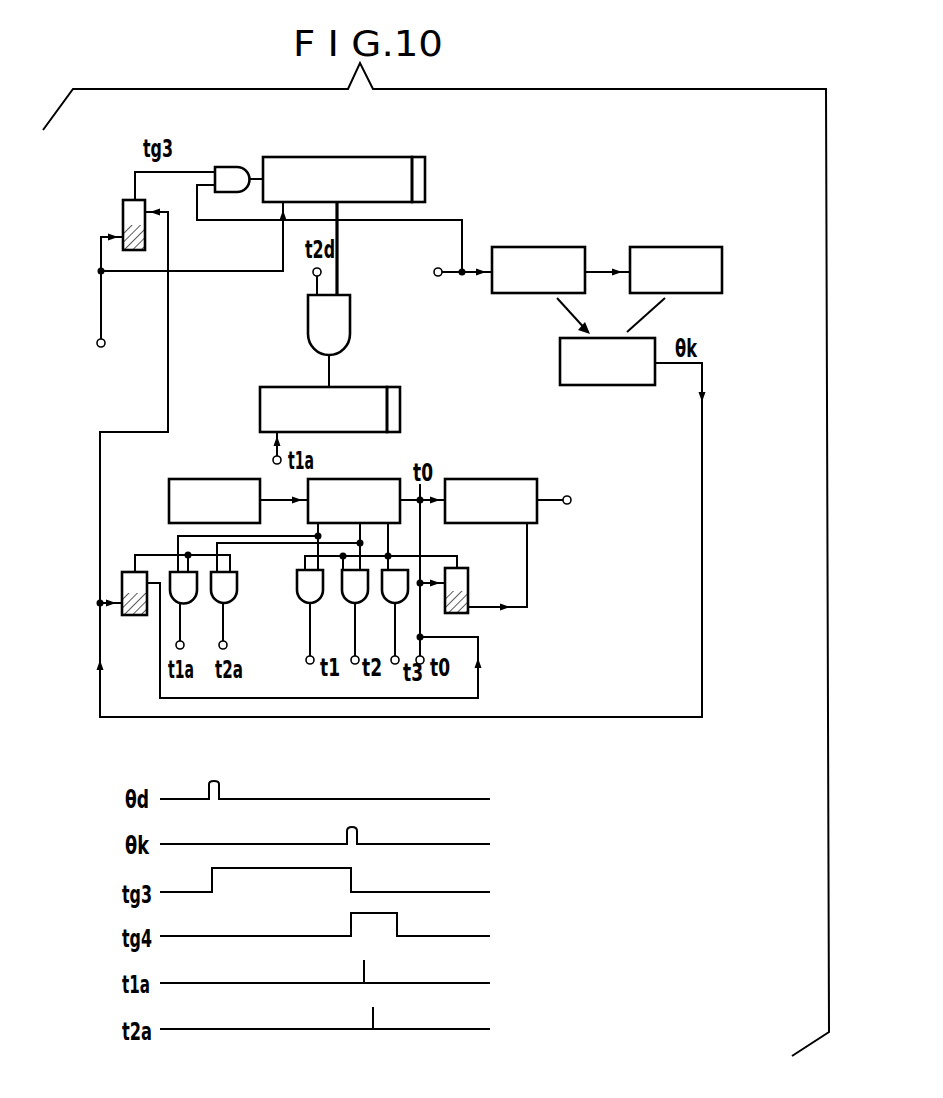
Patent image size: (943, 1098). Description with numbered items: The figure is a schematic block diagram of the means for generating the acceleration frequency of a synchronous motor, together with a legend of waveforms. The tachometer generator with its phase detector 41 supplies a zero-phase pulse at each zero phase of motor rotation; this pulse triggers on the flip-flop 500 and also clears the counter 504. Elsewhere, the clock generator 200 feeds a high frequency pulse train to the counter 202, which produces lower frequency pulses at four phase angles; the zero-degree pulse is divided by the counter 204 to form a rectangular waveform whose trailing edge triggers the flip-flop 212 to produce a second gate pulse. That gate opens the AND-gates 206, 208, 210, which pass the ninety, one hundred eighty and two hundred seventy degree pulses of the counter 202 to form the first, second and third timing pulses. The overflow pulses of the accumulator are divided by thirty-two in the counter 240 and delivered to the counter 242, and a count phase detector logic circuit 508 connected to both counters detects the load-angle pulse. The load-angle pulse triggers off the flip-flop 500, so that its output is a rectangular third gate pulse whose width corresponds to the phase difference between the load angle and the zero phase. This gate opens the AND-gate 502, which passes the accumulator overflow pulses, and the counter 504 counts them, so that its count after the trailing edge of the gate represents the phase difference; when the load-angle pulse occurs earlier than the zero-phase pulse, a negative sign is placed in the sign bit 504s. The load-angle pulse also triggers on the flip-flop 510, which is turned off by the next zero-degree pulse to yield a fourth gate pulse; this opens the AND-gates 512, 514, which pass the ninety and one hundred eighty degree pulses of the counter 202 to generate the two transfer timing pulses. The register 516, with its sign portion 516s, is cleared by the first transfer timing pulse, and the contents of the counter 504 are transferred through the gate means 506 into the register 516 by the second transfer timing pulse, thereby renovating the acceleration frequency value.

The tachometer generator with phase detector 41 is at (106, 350).
The flip-flop 500 is at (123, 210).
The AND-gate 502 is at (232, 167).
The counter 504 is at (316, 155).
The sign bit of counter 504s is at (426, 178).
The gate means 506 is at (329, 325).
The register 516 is at (323, 409).
The sign portion of register 516s is at (392, 386).
The counter 240 is at (538, 270).
The counter 242 is at (676, 270).
The count phase detector logic circuit 508 is at (607, 361).
The clock generator 200 is at (214, 501).
The counter 202 is at (354, 501).
The counter 204 is at (491, 501).
The AND-gate 206 is at (300, 585).
The AND-gate 208 is at (348, 601).
The AND-gate 210 is at (391, 601).
The flip-flop 212 is at (469, 580).
The flip-flop 510 is at (134, 616).
The AND-gate 512 is at (195, 603).
The AND-gate 514 is at (231, 603).